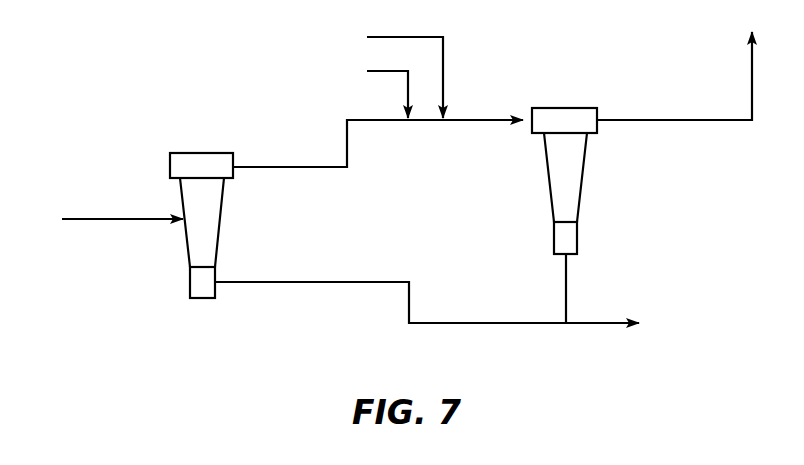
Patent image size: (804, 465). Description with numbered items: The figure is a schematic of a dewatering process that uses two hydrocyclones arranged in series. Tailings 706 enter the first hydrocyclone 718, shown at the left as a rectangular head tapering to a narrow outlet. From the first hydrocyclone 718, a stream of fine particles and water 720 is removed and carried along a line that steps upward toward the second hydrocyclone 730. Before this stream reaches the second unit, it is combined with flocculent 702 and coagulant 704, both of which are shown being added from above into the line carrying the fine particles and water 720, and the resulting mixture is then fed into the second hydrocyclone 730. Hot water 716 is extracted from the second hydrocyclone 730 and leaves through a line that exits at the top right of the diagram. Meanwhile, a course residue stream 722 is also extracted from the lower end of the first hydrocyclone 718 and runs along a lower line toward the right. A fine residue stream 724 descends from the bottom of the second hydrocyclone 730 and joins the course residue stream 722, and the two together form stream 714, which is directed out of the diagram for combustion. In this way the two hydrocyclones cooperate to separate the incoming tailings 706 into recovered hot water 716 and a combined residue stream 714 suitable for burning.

The flocculent 702 is at (383, 72).
The coagulant 704 is at (365, 89).
The tailings 706 is at (102, 220).
The stream for combustion 714 is at (625, 324).
The hot water 716 is at (685, 64).
The hydrocyclone 718 is at (188, 254).
The fine particles and water 720 is at (265, 167).
The course residue stream 722 is at (300, 282).
The fine residue stream 724 is at (567, 297).
The second hydrocyclone 730 is at (583, 184).